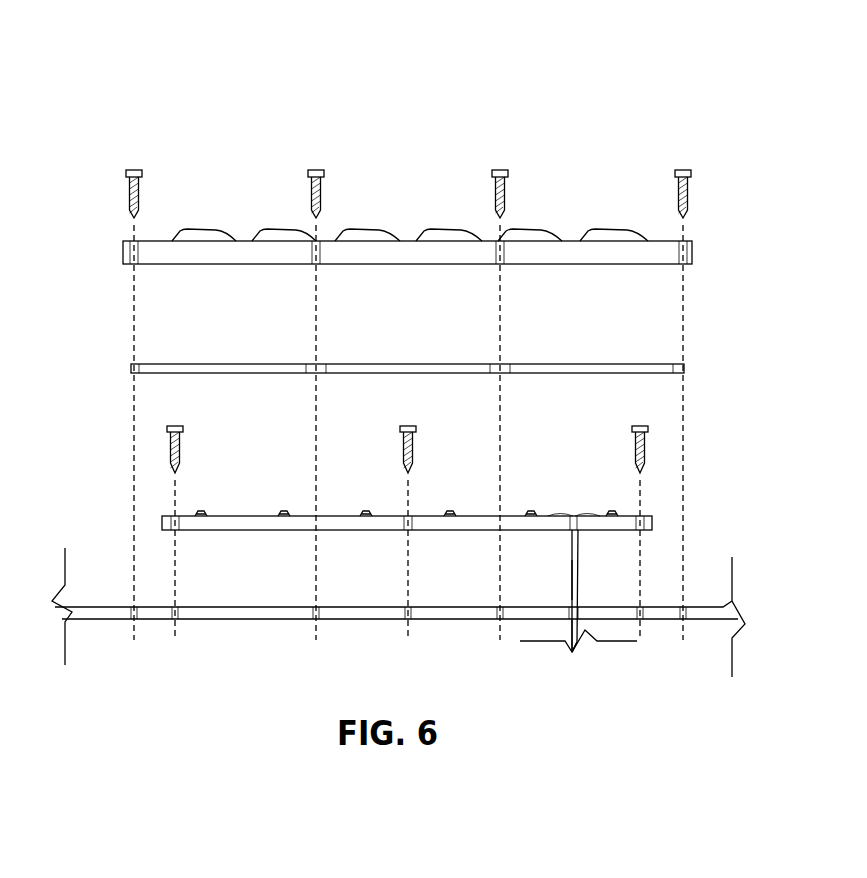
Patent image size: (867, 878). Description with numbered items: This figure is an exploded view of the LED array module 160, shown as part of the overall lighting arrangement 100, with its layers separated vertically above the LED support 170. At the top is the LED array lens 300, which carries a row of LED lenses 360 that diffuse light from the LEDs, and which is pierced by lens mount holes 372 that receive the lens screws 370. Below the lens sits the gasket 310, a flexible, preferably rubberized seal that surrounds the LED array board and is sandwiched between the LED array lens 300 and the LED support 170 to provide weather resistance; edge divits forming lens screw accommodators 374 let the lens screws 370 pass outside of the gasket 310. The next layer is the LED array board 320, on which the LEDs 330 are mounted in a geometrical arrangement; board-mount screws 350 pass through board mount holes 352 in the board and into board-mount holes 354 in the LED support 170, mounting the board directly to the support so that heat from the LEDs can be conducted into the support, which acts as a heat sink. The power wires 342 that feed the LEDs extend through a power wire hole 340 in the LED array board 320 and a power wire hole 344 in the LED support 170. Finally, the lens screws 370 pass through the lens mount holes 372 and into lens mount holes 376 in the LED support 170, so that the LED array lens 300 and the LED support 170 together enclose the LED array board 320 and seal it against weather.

The mounting system 100 is at (147, 66).
The LED array module 160 is at (110, 147).
The LED support 170 is at (118, 606).
The LED array lens 300 is at (598, 266).
The gasket 310 is at (610, 363).
The LED array board 320 is at (396, 531).
The LEDs 330 is at (202, 510).
The power wire hole 340 is at (580, 534).
The power wires 342 is at (570, 582).
The power wire hole 344 is at (580, 604).
The board-mount screw 350 is at (175, 425).
The board mount hole 352 is at (181, 534).
The board-mount hole 354 is at (181, 624).
The LED lens 360 is at (192, 229).
The lens screw 370 is at (134, 168).
The lens mount hole 372 is at (129, 269).
The lens screw accommodator 374 is at (143, 361).
The lens mount hole 376 is at (689, 601).